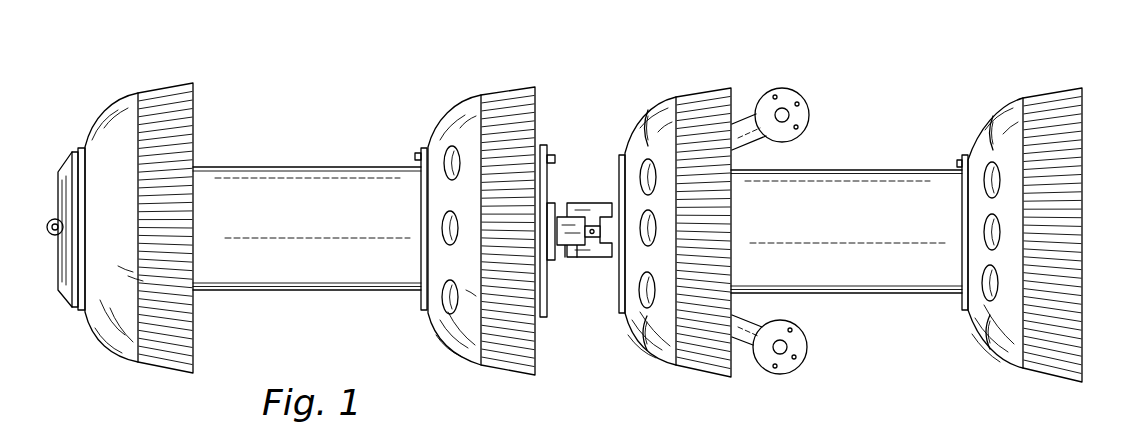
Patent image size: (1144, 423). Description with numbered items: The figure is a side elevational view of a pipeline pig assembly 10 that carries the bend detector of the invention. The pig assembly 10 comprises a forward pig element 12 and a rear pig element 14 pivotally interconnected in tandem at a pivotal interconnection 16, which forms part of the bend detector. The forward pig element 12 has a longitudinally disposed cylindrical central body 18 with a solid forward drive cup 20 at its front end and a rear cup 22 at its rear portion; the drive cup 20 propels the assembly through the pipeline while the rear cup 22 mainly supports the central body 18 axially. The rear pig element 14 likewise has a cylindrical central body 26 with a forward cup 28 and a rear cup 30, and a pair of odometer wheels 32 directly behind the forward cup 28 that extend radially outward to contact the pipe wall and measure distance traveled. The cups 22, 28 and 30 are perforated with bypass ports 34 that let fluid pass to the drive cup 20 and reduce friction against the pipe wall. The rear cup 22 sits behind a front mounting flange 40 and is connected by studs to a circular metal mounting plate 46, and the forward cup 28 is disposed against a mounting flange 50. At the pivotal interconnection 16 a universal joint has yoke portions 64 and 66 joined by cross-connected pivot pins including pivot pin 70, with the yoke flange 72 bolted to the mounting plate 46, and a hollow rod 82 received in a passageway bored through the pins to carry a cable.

The pipeline pig assembly 10 is at (1012, 68).
The forward pig element 12 is at (266, 116).
The rear pig element 14 is at (895, 335).
The pivotal interconnection 16 is at (591, 315).
The central body 18 is at (319, 171).
The forward drive cup 20 is at (192, 349).
The rear cup 22 is at (505, 358).
The central body 26 is at (877, 181).
The forward cup 28 is at (709, 100).
The rear cup 30 is at (1070, 100).
The odometer wheels 32 is at (793, 97).
The bypass ports 34 is at (452, 158).
The front mounting flange 40 is at (424, 149).
The mounting plate 46 is at (546, 150).
The mounting flange 50 is at (622, 155).
The yoke portion 64 is at (560, 235).
The yoke portion 66 is at (590, 203).
The pivot pin 70 is at (571, 258).
The yoke flange 72 is at (552, 205).
The hollow rod 82 is at (600, 232).